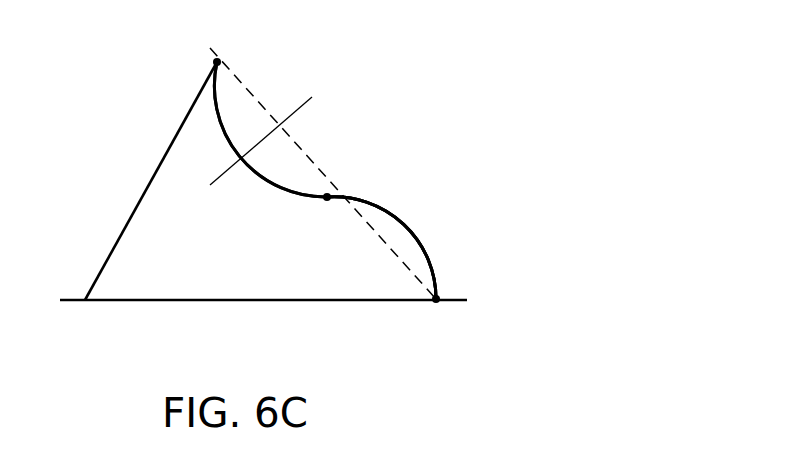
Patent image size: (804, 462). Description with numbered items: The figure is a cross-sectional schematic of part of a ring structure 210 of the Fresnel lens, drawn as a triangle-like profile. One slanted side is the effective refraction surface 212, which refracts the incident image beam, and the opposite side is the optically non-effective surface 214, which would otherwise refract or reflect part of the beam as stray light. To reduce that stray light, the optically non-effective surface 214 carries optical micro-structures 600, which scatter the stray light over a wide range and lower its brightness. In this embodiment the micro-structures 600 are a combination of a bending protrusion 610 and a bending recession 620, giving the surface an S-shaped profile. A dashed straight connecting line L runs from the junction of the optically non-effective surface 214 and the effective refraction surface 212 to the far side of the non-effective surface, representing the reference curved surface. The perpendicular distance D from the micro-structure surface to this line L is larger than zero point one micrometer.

The ring structure 210 is at (198, 268).
The effective refraction surface 212 is at (163, 157).
The optically non-effective surface 214 is at (420, 245).
The optical micro-structure 600 is at (325, 180).
The bending protrusion 610 is at (377, 207).
The bending recession 620 is at (216, 103).
The perpendicular distance D is at (290, 121).
The straight connecting line L is at (367, 233).